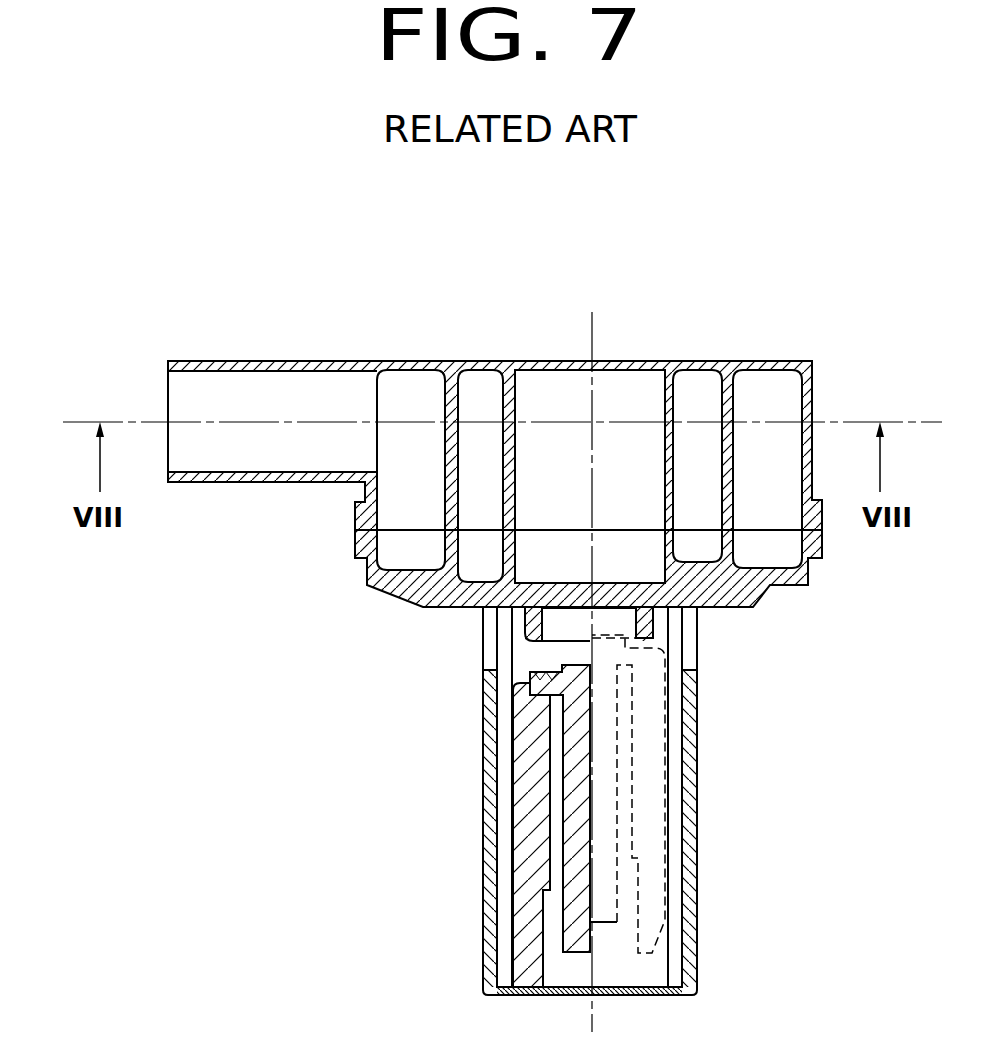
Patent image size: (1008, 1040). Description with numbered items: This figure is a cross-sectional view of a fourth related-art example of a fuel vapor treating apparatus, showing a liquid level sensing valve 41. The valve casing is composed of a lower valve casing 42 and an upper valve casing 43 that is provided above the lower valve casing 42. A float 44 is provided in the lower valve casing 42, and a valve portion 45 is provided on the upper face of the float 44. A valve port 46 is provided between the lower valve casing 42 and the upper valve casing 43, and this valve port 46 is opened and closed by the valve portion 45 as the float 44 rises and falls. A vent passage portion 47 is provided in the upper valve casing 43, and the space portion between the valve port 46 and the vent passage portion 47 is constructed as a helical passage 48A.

The liquid level sensing valve 41 is at (712, 790).
The lower valve casing 42 is at (488, 802).
The upper valve casing 43 is at (623, 366).
The float 44 is at (525, 888).
The valve portion 45 is at (525, 693).
The valve port 46 is at (537, 618).
The vent passage portion 47 is at (260, 474).
The helical passage 48A is at (682, 437).